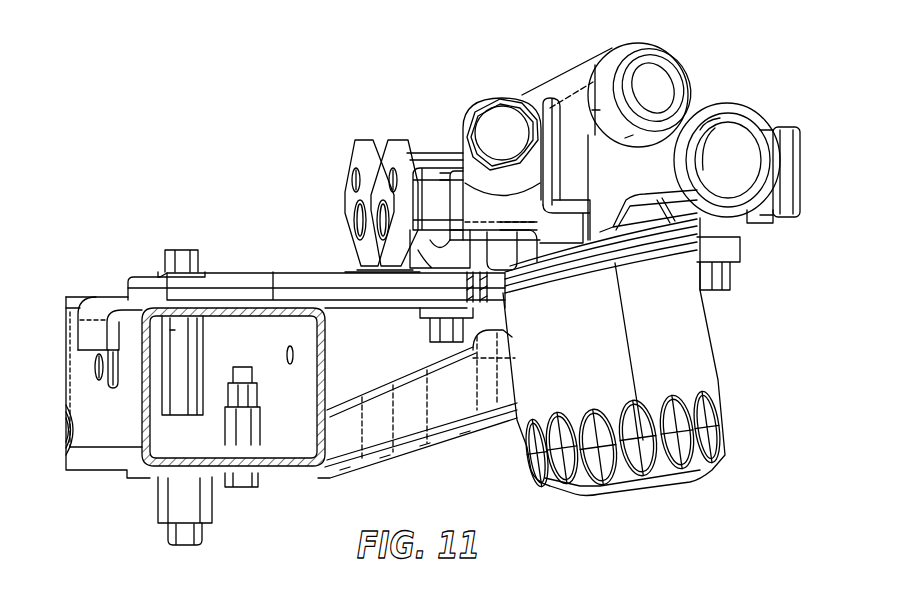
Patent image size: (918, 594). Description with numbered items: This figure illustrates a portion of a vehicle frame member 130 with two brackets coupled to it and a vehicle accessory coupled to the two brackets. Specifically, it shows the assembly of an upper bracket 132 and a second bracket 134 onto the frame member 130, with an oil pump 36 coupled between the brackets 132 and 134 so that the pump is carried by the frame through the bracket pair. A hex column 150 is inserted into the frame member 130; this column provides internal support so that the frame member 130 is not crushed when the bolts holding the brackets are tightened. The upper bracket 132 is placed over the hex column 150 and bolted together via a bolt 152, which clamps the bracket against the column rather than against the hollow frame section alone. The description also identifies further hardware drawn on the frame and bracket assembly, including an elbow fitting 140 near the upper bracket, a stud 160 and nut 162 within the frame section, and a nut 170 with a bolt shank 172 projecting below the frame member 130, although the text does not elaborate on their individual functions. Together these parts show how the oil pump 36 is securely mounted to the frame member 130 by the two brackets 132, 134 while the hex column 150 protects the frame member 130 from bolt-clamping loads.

The oil pump 36 is at (581, 366).
The frame member 130 is at (101, 460).
The upper bracket 132 is at (346, 298).
The bracket 134 is at (364, 390).
The elbow fitting 140 is at (92, 332).
The hex column 150 is at (196, 356).
The bolt 152 is at (186, 250).
The stud 160 is at (254, 436).
The nut 162 is at (237, 489).
The nut 170 is at (160, 506).
The bolt shank 172 is at (182, 546).